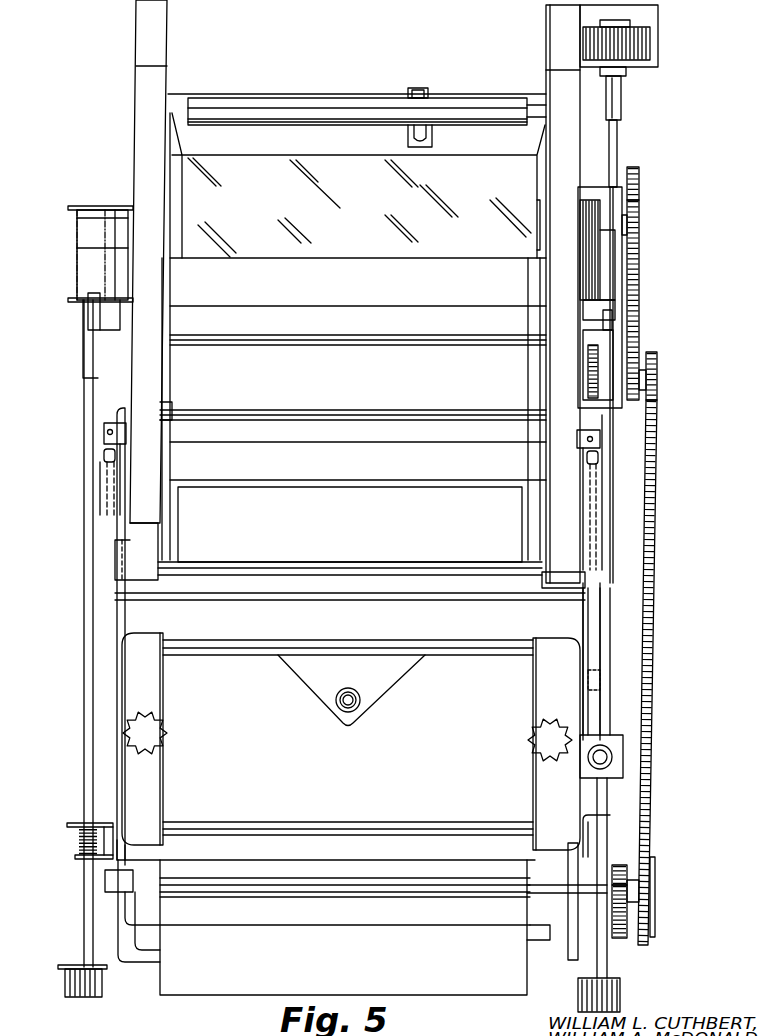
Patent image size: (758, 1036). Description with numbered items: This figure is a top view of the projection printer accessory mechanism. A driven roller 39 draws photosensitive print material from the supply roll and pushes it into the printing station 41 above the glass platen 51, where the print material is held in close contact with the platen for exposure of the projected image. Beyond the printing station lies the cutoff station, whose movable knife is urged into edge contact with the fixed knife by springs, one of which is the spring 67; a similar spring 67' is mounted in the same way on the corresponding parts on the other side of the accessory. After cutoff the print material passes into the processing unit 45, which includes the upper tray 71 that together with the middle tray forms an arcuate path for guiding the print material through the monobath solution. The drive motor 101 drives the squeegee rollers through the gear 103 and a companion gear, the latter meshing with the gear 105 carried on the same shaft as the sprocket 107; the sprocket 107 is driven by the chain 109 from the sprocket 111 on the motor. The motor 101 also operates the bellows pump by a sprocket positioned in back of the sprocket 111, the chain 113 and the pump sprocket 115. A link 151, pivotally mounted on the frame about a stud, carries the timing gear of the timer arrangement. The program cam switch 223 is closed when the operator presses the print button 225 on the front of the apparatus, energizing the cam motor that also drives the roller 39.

The driven roller 39 is at (278, 107).
The printing station 41 is at (197, 189).
The glass platen 51 is at (476, 234).
The program cam switch 223 is at (78, 267).
The spring 67 is at (84, 469).
The spring 67' is at (634, 492).
The processing unit 45 is at (186, 704).
The upper tray 71 is at (476, 796).
The pump sprocket 115 is at (640, 180).
The chain 113 is at (639, 247).
The drive motor 101 is at (612, 303).
The sprocket 111 is at (657, 378).
The chain 109 is at (656, 556).
The link 151 is at (588, 626).
The gear 103 is at (626, 866).
The gear 105 is at (618, 938).
The sprocket 107 is at (656, 890).
The print button 225 is at (70, 1003).